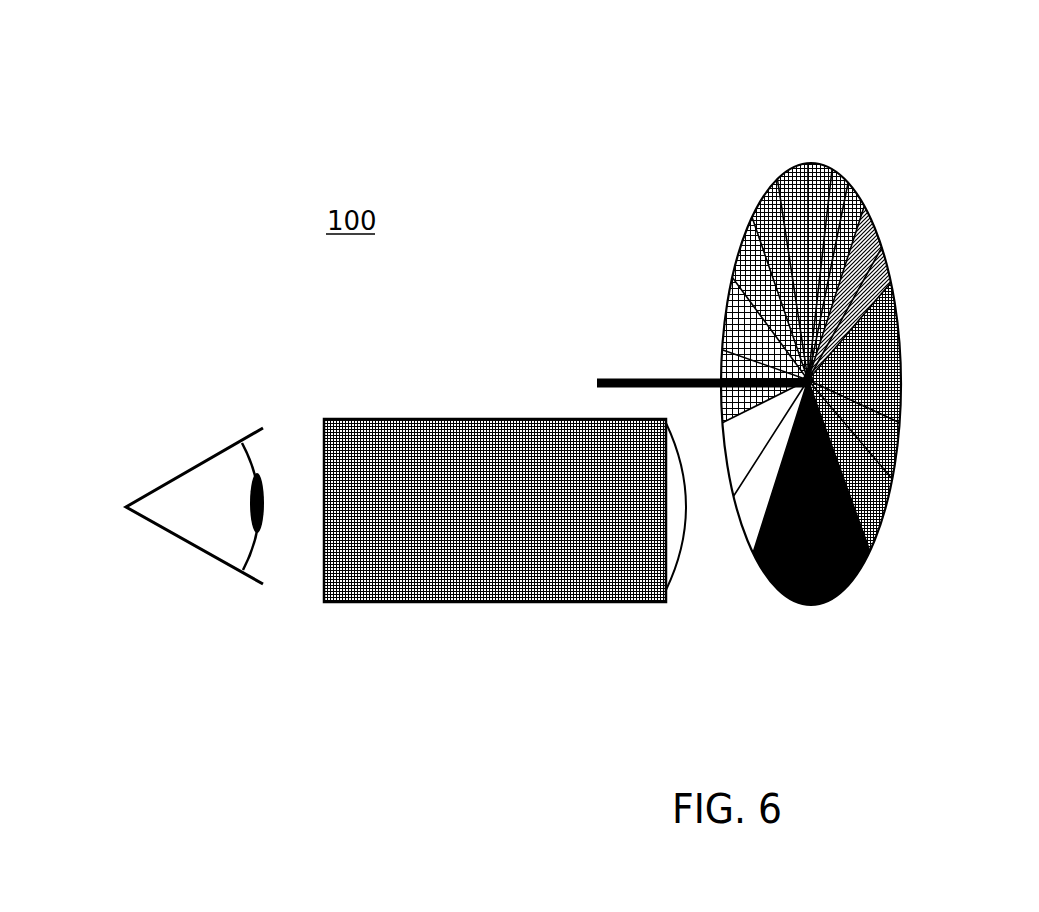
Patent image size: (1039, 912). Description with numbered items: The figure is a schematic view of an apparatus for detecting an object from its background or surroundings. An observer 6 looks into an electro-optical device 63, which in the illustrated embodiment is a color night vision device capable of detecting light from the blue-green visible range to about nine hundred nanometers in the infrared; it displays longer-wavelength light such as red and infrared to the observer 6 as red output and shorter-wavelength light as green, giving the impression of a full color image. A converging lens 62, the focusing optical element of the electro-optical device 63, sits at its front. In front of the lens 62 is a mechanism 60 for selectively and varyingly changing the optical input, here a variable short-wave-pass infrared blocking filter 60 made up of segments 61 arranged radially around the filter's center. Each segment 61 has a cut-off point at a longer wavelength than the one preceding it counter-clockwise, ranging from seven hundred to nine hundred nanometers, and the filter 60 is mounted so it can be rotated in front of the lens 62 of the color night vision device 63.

The observer 6 is at (190, 455).
The mechanism for selectively and varyingly changing the optical input 60 is at (794, 449).
The segments 61 is at (827, 178).
The converging lens 62 is at (690, 567).
The electro-optical device 63 is at (495, 413).